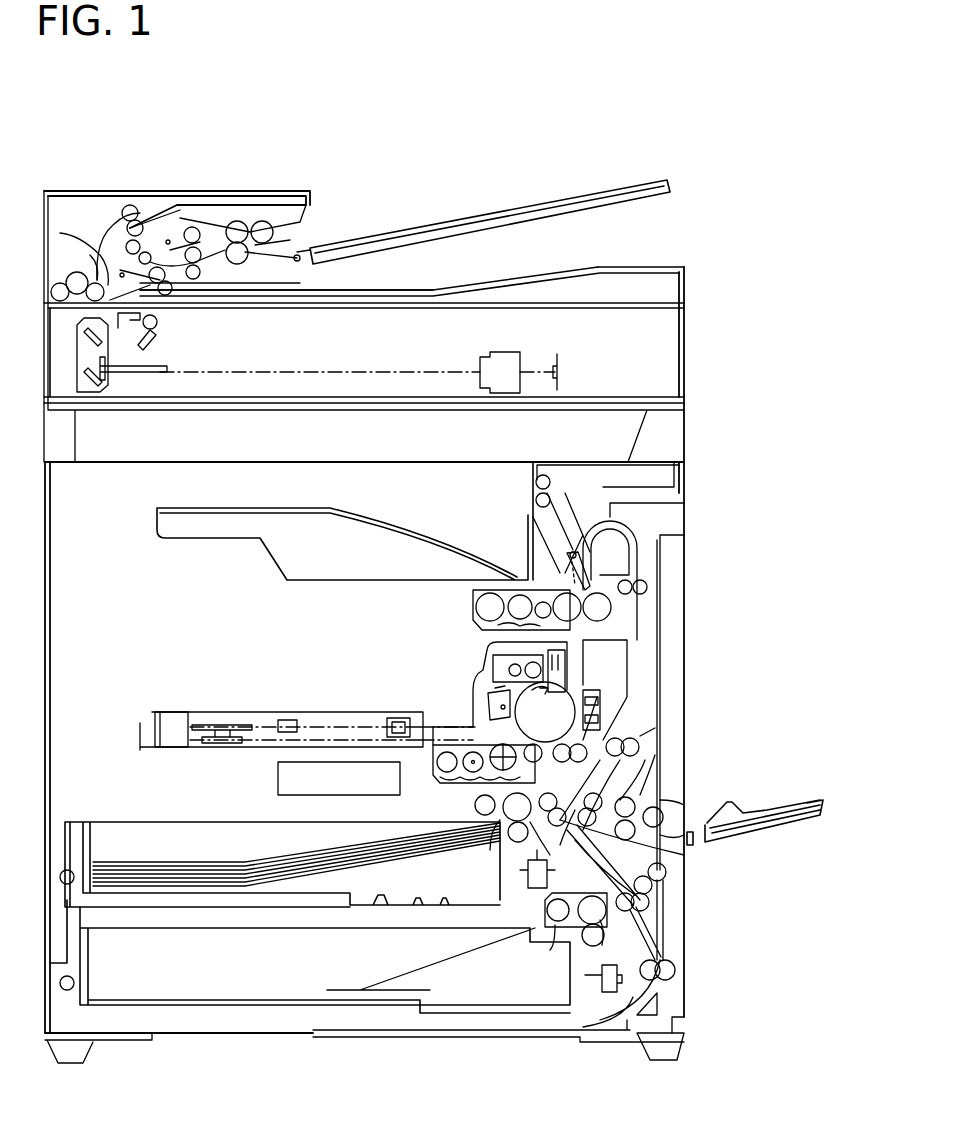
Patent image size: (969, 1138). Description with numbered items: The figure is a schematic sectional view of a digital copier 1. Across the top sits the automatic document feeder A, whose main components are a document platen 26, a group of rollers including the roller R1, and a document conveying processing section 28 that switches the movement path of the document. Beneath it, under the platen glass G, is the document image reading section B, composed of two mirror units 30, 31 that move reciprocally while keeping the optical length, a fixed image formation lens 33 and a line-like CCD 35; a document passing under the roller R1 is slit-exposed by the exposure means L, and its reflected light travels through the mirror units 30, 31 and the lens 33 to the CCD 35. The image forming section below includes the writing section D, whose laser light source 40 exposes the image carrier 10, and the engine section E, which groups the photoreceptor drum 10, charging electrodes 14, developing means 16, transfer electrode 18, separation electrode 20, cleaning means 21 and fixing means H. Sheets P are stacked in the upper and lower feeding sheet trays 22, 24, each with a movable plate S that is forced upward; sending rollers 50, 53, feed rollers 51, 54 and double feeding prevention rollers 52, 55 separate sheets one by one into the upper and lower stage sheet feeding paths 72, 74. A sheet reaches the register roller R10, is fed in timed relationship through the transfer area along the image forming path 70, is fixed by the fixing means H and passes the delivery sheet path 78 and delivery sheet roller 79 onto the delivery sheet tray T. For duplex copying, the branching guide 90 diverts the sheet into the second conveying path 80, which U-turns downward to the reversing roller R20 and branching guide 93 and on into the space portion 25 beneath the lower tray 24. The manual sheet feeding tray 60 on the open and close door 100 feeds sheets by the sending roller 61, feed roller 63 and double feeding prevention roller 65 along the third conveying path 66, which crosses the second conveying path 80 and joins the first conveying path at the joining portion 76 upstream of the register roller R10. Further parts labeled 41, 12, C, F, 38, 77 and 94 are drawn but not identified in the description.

The digital copier 1 is at (365, 1056).
The document conveying processing section 28 is at (162, 180).
The roller R1 is at (97, 267).
The document platen 26 is at (445, 218).
The automatic document feeder A is at (673, 232).
The document image reading section B is at (709, 344).
The platen glass G is at (400, 295).
The fixed image formation lens 33 is at (506, 353).
The line-like image pick-up element 35 is at (560, 372).
The mirror unit 31 is at (105, 392).
The exposure means L is at (157, 324).
The mirror unit 30 is at (155, 340).
The delivery sheet tray T is at (325, 508).
The laser light source 40 is at (168, 712).
The polygon mirror 41 is at (220, 725).
The writing section D is at (126, 744).
The laser scanner base 12 is at (147, 750).
The controller C is at (278, 782).
The engine section E is at (404, 680).
The sheet feeding section F is at (178, 808).
The sheet discharge roller unit 38 is at (457, 610).
The fixing means H is at (600, 612).
The delivery sheet roller 79 is at (536, 480).
The delivery sheet path 78 is at (560, 530).
The branching guide 90 is at (590, 575).
The second conveying path 80 is at (630, 520).
The image forming path 70 is at (605, 640).
The open and close door 100 is at (687, 668).
The image carrier 10 is at (557, 723).
The cleaning means 21 is at (493, 668).
The charging electrodes 14 is at (488, 705).
The separation electrode 20 is at (598, 692).
The developing means 16 is at (433, 783).
The transfer electrode 18 is at (588, 750).
The register roller R10 is at (640, 745).
The joining portion 76 is at (640, 752).
The sending roller 50 is at (475, 805).
The feed roller 51 is at (533, 825).
The feed roller 63 is at (635, 800).
The sending roller 61 is at (666, 808).
The manual sheet feeding tray 60 is at (750, 812).
The double feeding prevention roller 65 is at (668, 868).
The feeding sheet tray 22 is at (146, 858).
The recording sheet P is at (265, 866).
The feeding sheet tray 24 is at (146, 968).
The movable plate S is at (412, 978).
The space portion 25 is at (250, 1027).
The double feeding prevention roller 52 is at (535, 878).
The third conveying path 66 is at (600, 905).
The lower stage sheet feeding path 74 is at (600, 937).
The upper stage sheet feeding path 72 is at (549, 869).
The sending roller 53 is at (558, 922).
The feed roller 54 is at (650, 900).
The conveying guide 77 is at (660, 935).
The reversing roller R20 is at (675, 968).
The double feeding prevention roller 55 is at (605, 978).
The branching guide 93 is at (660, 1010).
The bottom cover 94 is at (684, 1032).